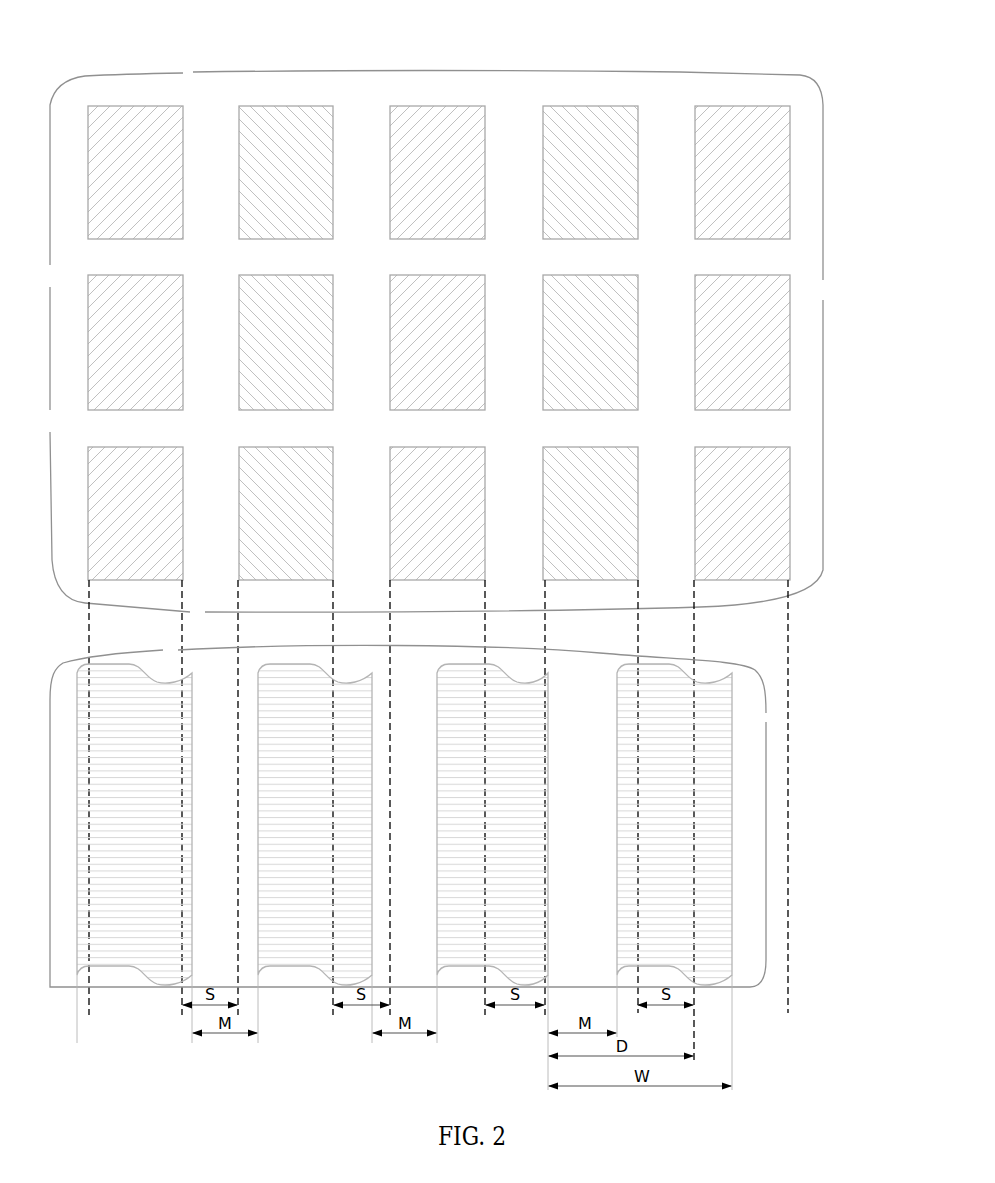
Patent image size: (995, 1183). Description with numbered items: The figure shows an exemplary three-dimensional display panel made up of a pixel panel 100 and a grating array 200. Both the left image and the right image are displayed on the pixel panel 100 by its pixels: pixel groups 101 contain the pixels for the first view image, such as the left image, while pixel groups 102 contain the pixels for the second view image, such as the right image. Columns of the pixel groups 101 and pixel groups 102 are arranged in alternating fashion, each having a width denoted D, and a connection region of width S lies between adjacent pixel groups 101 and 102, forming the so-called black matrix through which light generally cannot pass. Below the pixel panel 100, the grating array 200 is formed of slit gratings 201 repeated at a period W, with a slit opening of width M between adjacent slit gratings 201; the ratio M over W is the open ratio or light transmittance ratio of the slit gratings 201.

The pixel panel 100 is at (770, 255).
The pixel group 101 is at (110, 106).
The pixel group 102 is at (258, 106).
The grating array 200 is at (745, 748).
The slit grating 201 is at (92, 666).